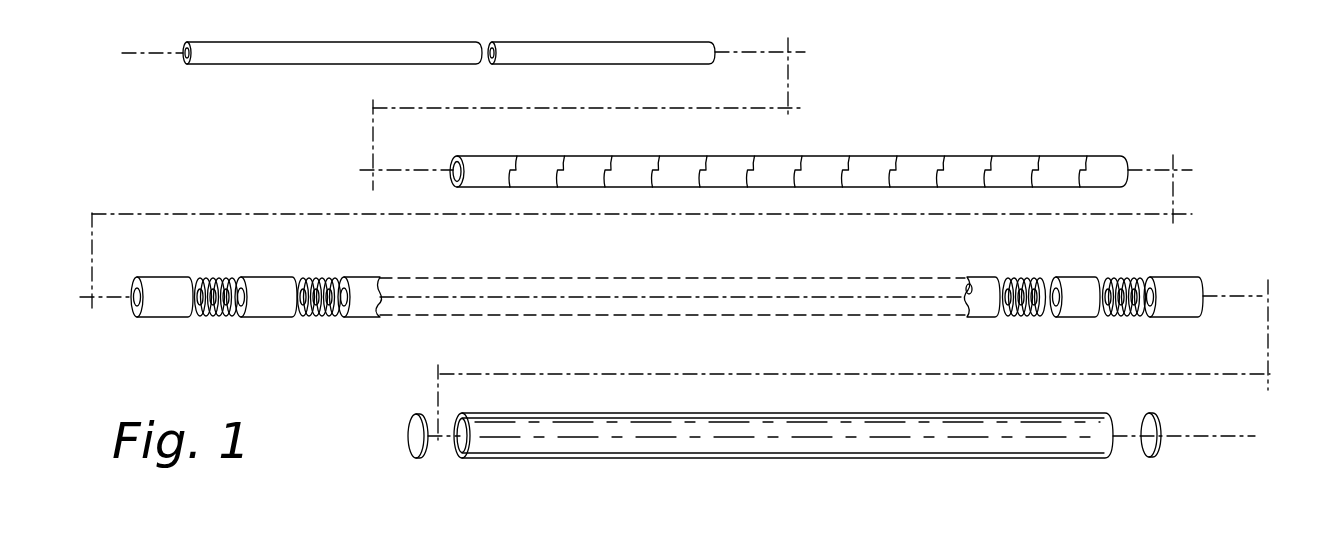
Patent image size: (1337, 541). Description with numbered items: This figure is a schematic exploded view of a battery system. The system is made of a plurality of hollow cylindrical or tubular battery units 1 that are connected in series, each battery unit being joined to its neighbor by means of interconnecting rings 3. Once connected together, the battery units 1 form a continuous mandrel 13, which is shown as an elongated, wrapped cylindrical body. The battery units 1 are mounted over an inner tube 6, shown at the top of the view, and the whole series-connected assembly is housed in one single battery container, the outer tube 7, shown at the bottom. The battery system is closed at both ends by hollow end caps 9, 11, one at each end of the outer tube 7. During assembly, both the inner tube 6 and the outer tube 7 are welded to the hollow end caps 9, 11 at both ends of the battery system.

The battery unit 1 is at (358, 317).
The interconnecting ring 3 is at (322, 278).
The inner tube 6 is at (250, 56).
The outer tube 7 is at (823, 443).
The hollow end cap 9 is at (413, 438).
The hollow end cap 11 is at (1148, 447).
The continuous mandrel 13 is at (884, 146).